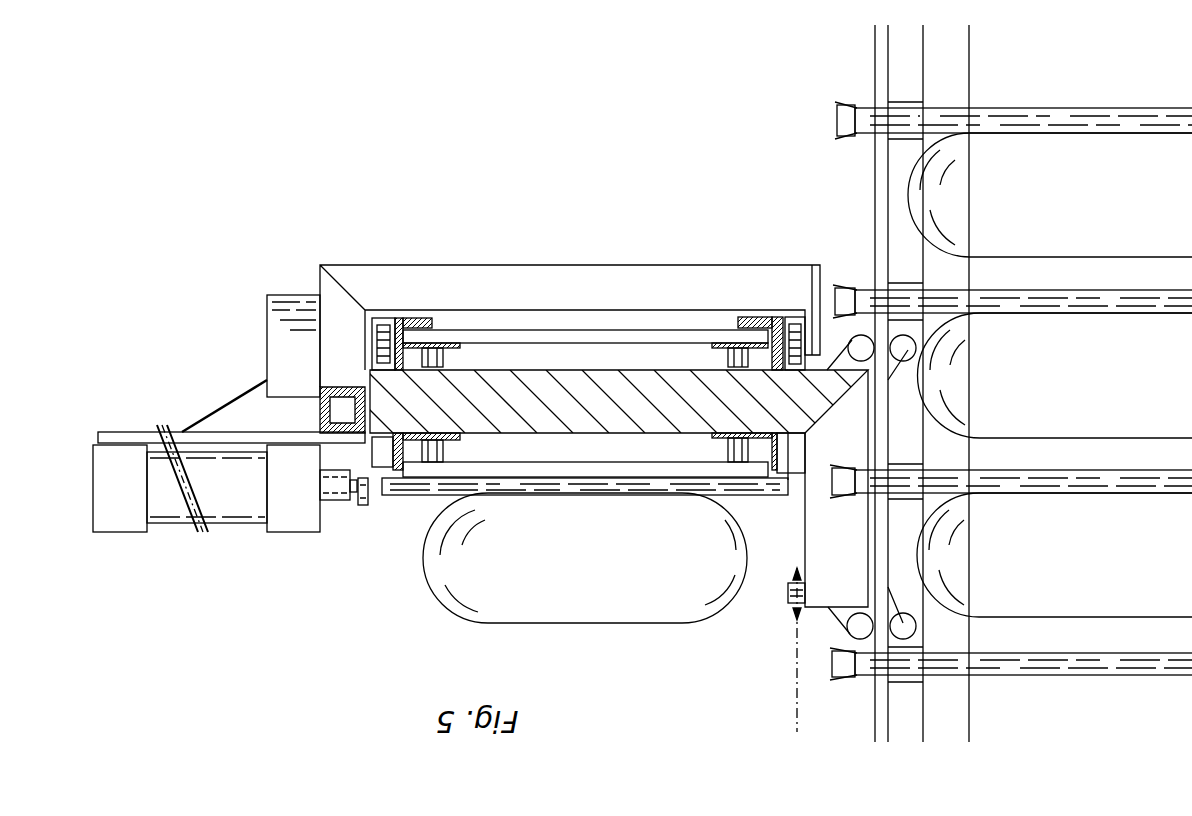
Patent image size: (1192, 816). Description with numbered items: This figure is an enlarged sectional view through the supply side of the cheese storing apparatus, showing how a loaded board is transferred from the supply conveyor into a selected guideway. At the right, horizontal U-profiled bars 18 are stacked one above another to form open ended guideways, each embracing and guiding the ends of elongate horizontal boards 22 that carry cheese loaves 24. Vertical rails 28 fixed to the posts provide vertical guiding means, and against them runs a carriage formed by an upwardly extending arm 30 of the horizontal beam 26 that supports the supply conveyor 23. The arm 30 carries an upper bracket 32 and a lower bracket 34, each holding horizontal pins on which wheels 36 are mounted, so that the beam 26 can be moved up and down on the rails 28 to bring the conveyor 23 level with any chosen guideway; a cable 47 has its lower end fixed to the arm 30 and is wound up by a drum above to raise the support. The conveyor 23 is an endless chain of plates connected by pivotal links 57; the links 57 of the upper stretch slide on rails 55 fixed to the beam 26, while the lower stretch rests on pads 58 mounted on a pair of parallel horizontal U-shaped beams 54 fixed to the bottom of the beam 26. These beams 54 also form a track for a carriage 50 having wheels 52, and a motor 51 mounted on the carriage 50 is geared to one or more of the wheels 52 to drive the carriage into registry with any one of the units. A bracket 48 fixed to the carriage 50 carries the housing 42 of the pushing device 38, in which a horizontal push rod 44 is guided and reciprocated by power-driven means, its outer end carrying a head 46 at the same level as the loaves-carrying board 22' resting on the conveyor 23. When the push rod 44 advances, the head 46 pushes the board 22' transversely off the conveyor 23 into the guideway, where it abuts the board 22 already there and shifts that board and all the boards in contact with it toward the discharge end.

The U-profiled bar 18 is at (1047, 655).
The board 22 is at (1011, 451).
The loaves-carrying board 22' is at (585, 514).
The supply conveyor 23 is at (426, 470).
The cheese loaf 24 is at (590, 612).
The beam 26 is at (573, 385).
The rail 28 is at (880, 714).
The arm 30 is at (808, 525).
The upper bracket 32 is at (808, 606).
The lower bracket 34 is at (893, 368).
The wheel 36 is at (858, 362).
The pushing device 38 is at (290, 540).
The housing 42 is at (168, 510).
The push rod 44 is at (356, 478).
The head 46 is at (364, 505).
The cable 47 is at (795, 698).
The bracket 48 is at (237, 398).
The carriage 50 is at (535, 280).
The motor 51 is at (280, 348).
The wheel 52 is at (380, 318).
The U-shaped beam 54 is at (776, 317).
The rail 55 is at (790, 450).
The pivotal link 57 is at (443, 449).
The pad 58 is at (434, 321).